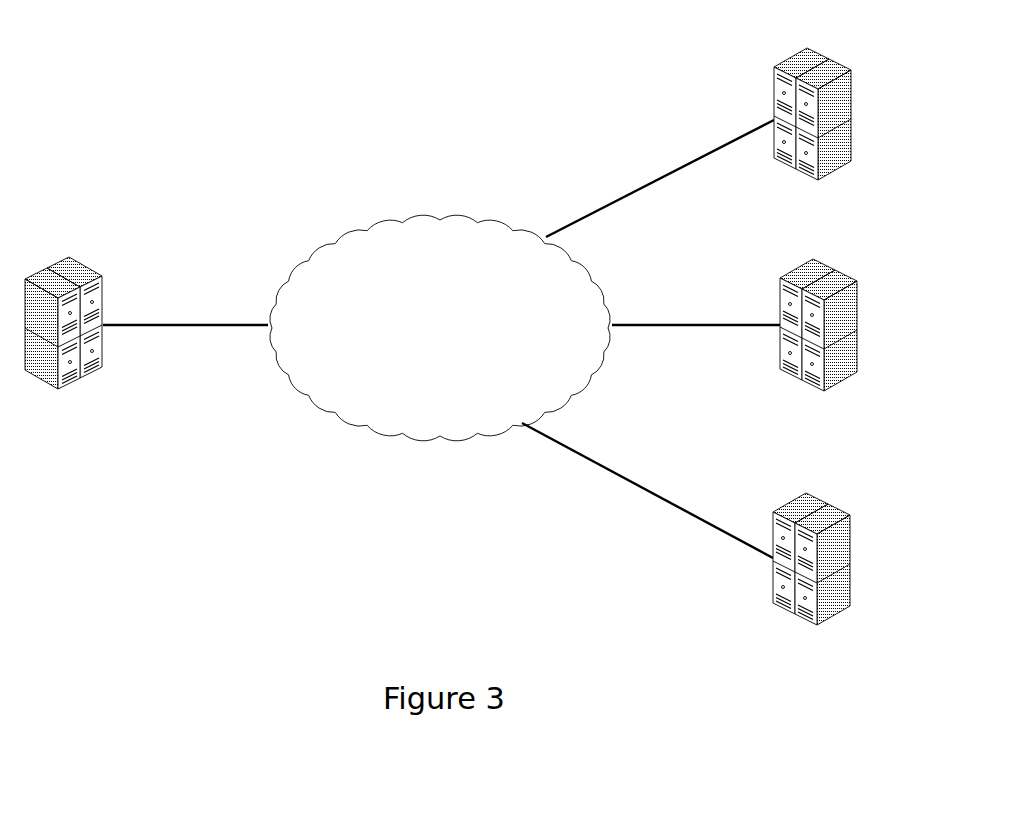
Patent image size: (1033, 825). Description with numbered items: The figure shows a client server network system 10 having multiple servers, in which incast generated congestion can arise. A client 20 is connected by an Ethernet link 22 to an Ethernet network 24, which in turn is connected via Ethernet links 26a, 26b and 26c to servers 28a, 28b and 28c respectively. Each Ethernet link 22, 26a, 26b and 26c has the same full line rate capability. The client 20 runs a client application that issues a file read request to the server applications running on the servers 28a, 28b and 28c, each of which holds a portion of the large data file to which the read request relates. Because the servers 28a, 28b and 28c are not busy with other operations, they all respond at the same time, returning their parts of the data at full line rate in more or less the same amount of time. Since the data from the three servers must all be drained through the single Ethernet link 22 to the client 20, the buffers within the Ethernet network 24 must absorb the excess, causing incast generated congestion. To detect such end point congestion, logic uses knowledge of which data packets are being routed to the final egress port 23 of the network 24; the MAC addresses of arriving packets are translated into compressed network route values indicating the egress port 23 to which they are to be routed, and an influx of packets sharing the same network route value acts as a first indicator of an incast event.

The network system 10 is at (193, 488).
The client 20 is at (82, 265).
The Ethernet link 22 is at (174, 322).
The egress port 23 is at (543, 240).
The Ethernet network 24 is at (440, 328).
The Ethernet link 26a is at (673, 172).
The Ethernet link 26b is at (673, 322).
The Ethernet link 26c is at (634, 483).
The server 28a is at (784, 62).
The server 28b is at (790, 272).
The server 28c is at (783, 506).